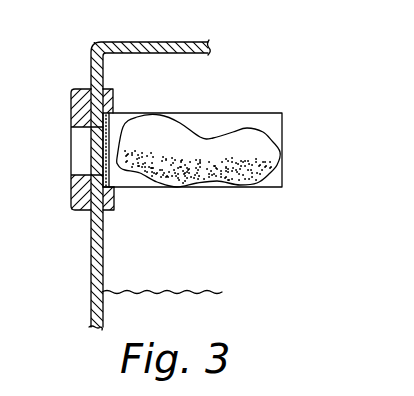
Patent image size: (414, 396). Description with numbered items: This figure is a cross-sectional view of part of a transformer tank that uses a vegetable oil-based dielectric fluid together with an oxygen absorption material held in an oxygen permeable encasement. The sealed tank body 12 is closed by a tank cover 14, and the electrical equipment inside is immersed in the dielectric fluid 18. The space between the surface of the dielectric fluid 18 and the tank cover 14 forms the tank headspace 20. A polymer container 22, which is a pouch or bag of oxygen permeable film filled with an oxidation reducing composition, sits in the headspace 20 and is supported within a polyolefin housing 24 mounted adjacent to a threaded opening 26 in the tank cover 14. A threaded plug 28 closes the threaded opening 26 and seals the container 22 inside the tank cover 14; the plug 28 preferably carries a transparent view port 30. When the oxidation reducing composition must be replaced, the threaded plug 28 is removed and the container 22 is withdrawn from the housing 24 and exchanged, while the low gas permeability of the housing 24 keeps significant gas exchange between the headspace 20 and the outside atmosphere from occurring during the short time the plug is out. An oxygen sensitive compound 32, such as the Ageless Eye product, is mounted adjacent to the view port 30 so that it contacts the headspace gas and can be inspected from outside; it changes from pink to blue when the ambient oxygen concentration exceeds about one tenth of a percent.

The tank body 12 is at (90, 257).
The tank cover 14 is at (167, 42).
The dielectric fluid 18 is at (215, 293).
The tank headspace 20 is at (148, 273).
The polymer container 22 is at (263, 137).
The polyolefin housing 24 is at (236, 112).
The threaded opening 26 is at (100, 183).
The threaded plug 28 is at (71, 188).
The transparent view port 30 is at (73, 151).
The oxygen sensitive compound 32 is at (108, 130).